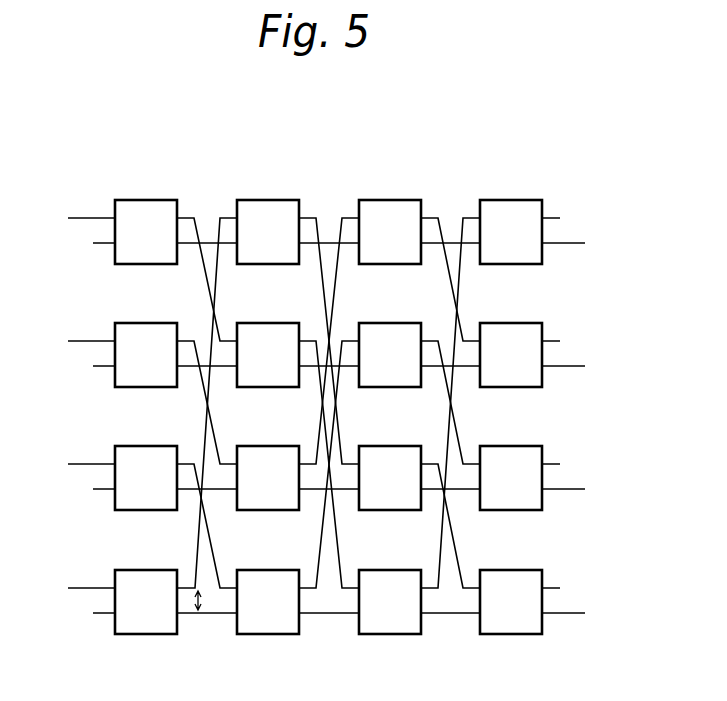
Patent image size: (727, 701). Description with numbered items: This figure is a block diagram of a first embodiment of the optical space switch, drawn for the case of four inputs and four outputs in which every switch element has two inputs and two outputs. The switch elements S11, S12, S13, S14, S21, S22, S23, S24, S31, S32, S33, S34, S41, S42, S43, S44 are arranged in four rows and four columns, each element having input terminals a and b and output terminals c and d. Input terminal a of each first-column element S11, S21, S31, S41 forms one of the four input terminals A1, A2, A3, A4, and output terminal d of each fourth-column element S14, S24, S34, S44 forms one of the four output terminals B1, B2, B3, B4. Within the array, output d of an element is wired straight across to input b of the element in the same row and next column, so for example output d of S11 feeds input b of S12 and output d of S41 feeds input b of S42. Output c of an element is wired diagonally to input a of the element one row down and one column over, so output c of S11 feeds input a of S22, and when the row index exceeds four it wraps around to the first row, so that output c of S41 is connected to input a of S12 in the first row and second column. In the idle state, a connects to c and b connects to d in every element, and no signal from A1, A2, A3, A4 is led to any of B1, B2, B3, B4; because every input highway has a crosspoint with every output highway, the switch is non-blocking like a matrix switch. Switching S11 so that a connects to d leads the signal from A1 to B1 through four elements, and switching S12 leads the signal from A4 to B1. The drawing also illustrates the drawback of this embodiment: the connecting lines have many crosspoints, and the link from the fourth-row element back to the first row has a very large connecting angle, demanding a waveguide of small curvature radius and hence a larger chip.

The switch element S11 is at (146, 219).
The switch element S12 is at (268, 219).
The switch element S13 is at (390, 219).
The switch element S14 is at (511, 219).
The switch element S21 is at (146, 342).
The switch element S22 is at (268, 342).
The switch element S23 is at (390, 342).
The switch element S24 is at (511, 342).
The switch element S31 is at (146, 465).
The switch element S32 is at (268, 465).
The switch element S33 is at (390, 465).
The switch element S34 is at (511, 465).
The switch element S41 is at (146, 589).
The switch element S42 is at (268, 589).
The switch element S43 is at (390, 589).
The switch element S44 is at (511, 589).
The input terminal A1 is at (75, 218).
The input terminal A2 is at (75, 341).
The input terminal A3 is at (75, 464).
The input terminal A4 is at (75, 588).
The output terminal B1 is at (579, 243).
The output terminal B2 is at (579, 366).
The output terminal B3 is at (579, 489).
The output terminal B4 is at (579, 613).